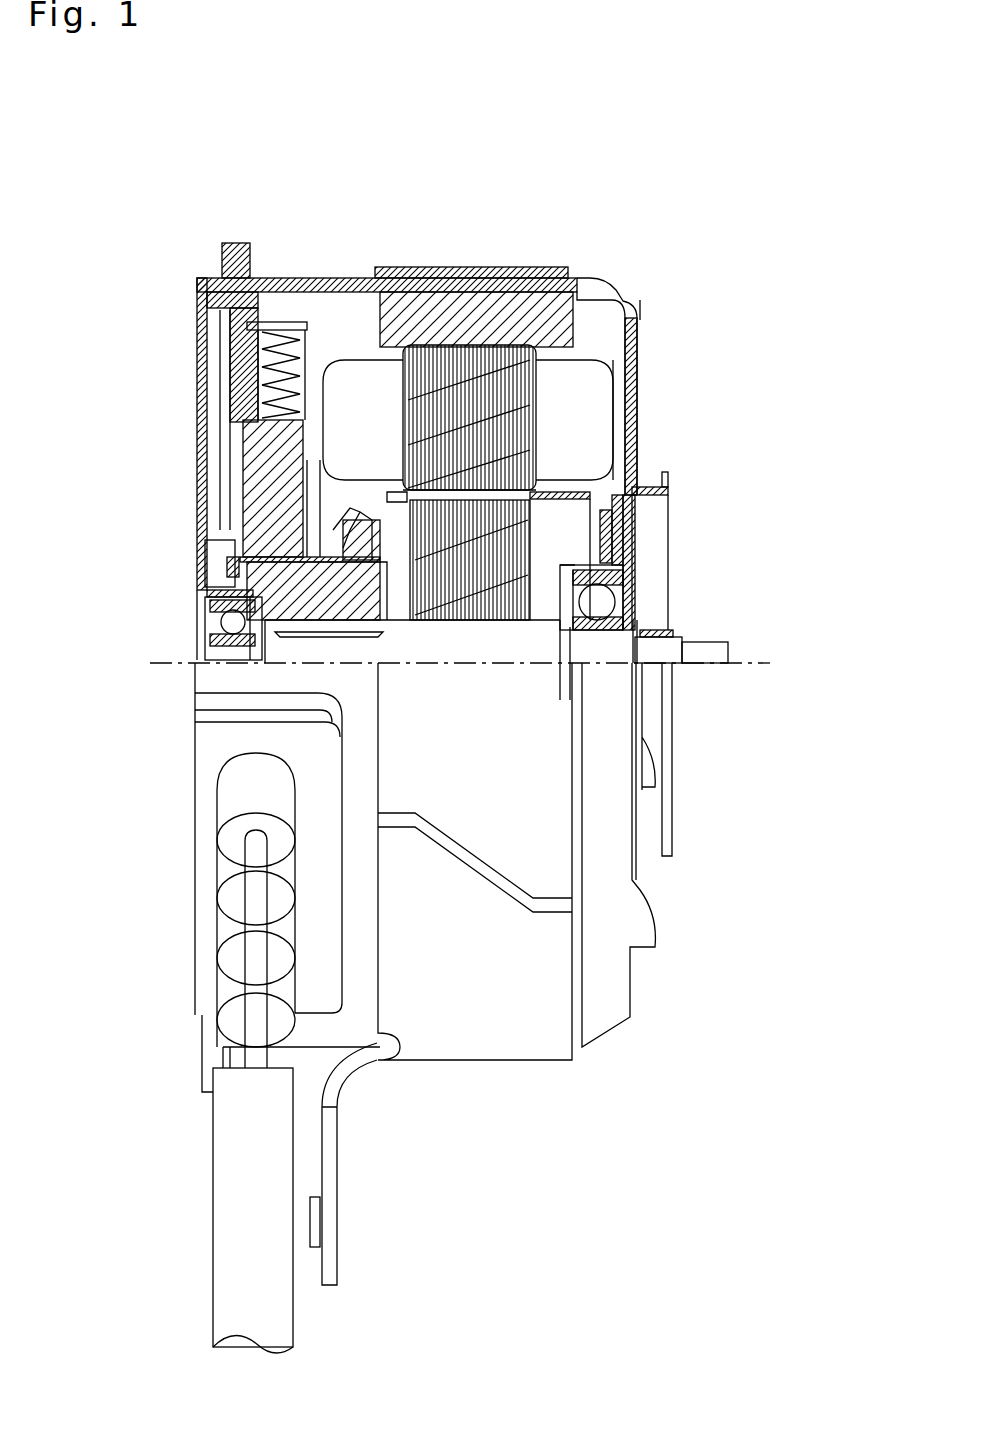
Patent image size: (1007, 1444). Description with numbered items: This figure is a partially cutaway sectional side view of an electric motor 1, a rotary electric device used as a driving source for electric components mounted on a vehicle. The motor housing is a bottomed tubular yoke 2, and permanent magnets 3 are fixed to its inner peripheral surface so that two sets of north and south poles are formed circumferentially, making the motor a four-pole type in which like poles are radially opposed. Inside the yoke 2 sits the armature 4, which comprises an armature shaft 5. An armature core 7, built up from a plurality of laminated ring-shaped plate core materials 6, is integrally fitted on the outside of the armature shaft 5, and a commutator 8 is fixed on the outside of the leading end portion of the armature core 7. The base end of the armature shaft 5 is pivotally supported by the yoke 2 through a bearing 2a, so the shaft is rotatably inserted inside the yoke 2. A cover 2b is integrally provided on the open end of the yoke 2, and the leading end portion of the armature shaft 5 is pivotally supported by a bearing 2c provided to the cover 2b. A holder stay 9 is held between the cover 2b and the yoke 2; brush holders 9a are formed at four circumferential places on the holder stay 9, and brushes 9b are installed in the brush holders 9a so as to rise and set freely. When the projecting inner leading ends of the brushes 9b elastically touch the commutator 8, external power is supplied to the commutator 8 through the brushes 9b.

The electric motor 1 is at (745, 285).
The yoke 2 is at (322, 283).
The bearing 2a is at (630, 577).
The cover 2b is at (197, 350).
The bearing 2c is at (207, 605).
The permanent magnets 3 is at (485, 320).
The armature 4 is at (614, 350).
The armature shaft 5 is at (713, 655).
The ring-shaped plate core materials 6 is at (500, 347).
The armature core 7 is at (400, 345).
The commutator 8 is at (228, 572).
The holder stay 9 is at (215, 290).
The brush holders 9a is at (290, 322).
The brushes 9b is at (275, 455).